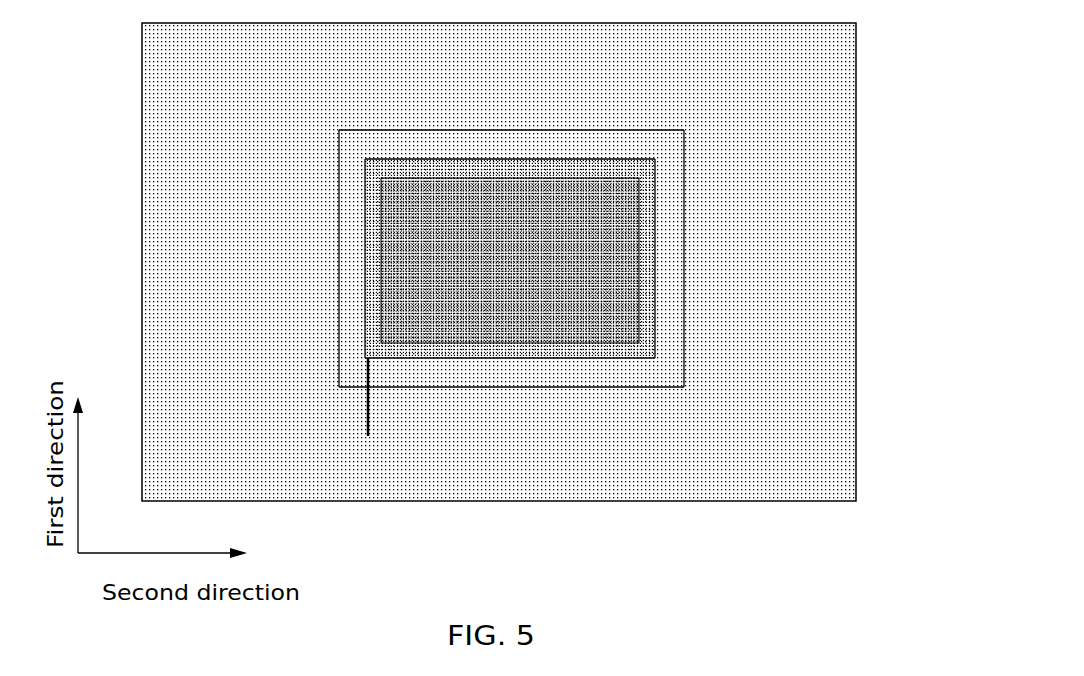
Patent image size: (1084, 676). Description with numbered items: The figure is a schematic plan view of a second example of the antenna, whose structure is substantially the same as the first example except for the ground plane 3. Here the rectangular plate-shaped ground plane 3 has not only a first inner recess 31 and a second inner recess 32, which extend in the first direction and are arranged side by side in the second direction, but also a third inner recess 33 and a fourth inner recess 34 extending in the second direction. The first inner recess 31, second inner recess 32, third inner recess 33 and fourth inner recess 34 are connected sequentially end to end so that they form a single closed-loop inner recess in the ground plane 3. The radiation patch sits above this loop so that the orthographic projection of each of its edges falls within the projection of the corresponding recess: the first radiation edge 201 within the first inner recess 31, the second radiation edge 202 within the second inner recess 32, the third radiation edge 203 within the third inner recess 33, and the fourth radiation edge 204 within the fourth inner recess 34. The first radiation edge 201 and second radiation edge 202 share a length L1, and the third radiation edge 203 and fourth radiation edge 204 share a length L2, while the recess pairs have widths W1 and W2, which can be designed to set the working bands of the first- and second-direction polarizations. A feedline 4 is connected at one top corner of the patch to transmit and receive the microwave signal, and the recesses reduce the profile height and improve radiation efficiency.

The ground plane 3 is at (815, 329).
The feedline 4 is at (367, 428).
The first inner recess 31 is at (352, 275).
The second inner recess 32 is at (668, 278).
The third inner recess 33 is at (548, 145).
The fourth inner recess 34 is at (512, 387).
The first radiation edge 201 is at (365, 210).
The second radiation edge 202 is at (656, 212).
The third radiation edge 203 is at (615, 158).
The fourth radiation edge 204 is at (425, 358).